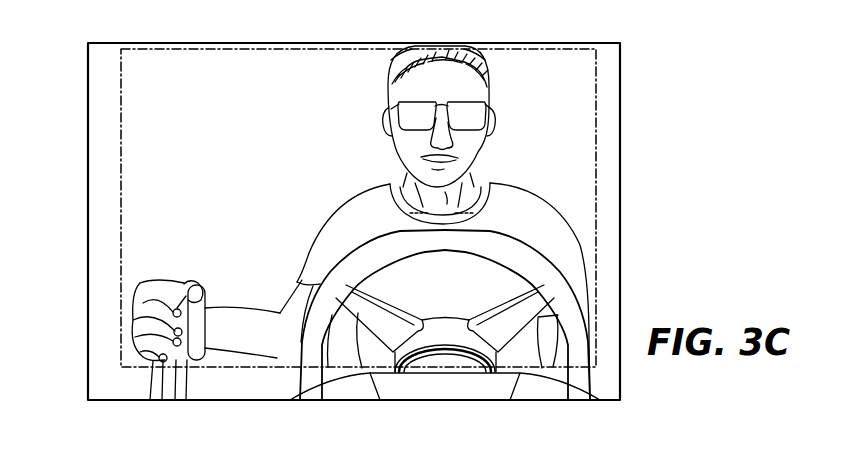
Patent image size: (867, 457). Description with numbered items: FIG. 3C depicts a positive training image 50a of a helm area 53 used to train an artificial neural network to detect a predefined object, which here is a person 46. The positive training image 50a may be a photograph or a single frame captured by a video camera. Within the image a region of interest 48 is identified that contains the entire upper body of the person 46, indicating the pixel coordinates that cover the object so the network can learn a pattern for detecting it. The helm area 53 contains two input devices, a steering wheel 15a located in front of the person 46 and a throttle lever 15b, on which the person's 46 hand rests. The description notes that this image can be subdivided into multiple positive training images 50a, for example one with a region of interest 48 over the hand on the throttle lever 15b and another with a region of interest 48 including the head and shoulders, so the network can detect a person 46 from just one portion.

The helm area 53 is at (148, 68).
The region of interest 48 is at (603, 80).
The positive training image 50a is at (605, 158).
The person 46 is at (493, 83).
The throttle lever 15b is at (183, 292).
The steering wheel 15a is at (302, 345).